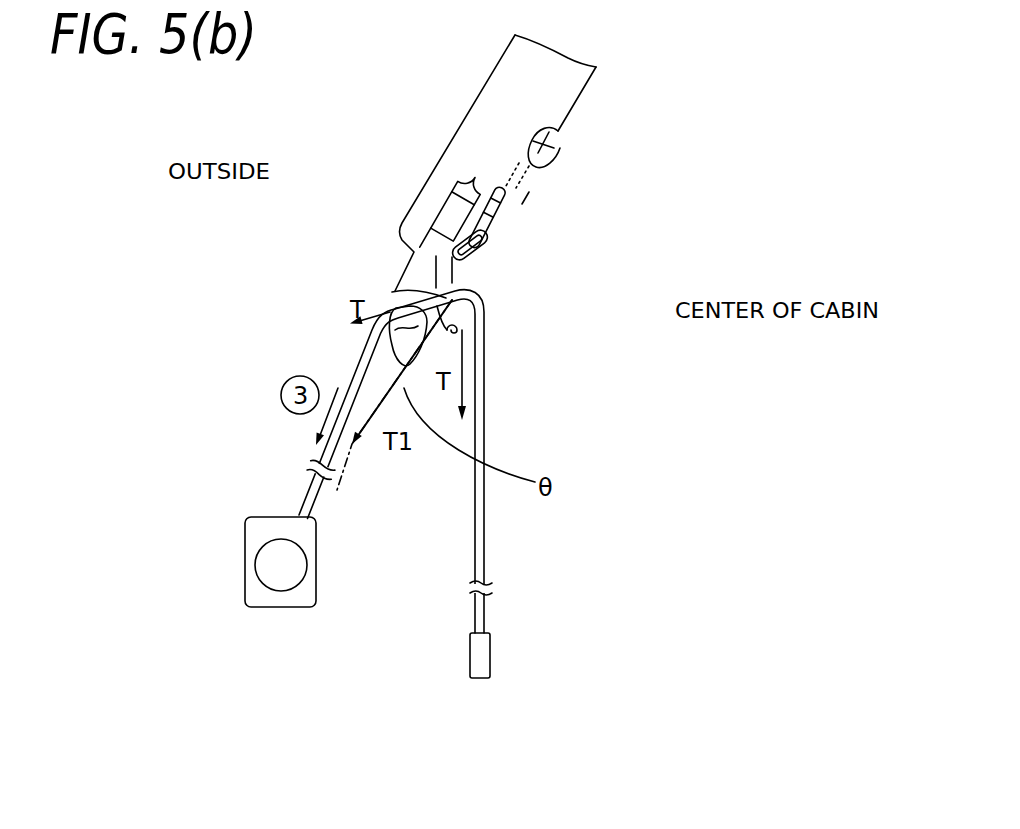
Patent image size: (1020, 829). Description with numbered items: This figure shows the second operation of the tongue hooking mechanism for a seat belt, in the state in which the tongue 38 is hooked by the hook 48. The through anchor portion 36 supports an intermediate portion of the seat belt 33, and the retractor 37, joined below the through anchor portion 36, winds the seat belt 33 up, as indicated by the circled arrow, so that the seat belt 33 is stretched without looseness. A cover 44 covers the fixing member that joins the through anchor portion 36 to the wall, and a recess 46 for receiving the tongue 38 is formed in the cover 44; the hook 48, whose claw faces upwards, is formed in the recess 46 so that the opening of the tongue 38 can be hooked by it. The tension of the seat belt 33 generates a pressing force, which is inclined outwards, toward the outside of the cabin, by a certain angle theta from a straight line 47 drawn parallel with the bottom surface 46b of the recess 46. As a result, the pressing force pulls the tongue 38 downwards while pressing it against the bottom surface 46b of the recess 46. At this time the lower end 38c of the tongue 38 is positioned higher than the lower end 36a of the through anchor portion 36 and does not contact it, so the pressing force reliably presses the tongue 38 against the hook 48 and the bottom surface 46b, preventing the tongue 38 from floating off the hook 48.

The seat belt 33 is at (368, 352).
The through anchor portion 36 is at (400, 277).
The lower end of the through anchor portion 36a is at (403, 305).
The retractor 37 is at (245, 568).
The tongue 38 is at (492, 222).
The lower end of the tongue 38c is at (484, 322).
The cover 44 is at (443, 162).
The recess 46 is at (555, 148).
The bottom surface of the recess 46b is at (510, 208).
The straight line 47 is at (357, 462).
The hook 48 is at (527, 178).